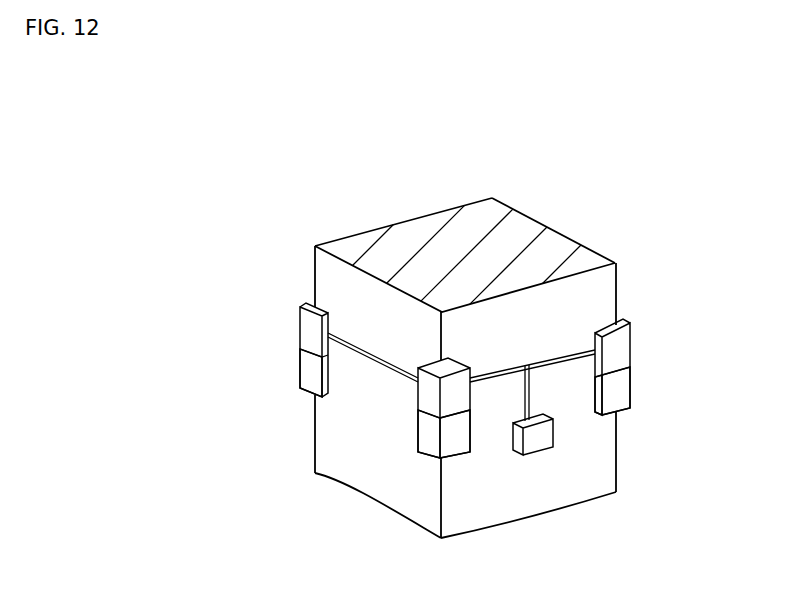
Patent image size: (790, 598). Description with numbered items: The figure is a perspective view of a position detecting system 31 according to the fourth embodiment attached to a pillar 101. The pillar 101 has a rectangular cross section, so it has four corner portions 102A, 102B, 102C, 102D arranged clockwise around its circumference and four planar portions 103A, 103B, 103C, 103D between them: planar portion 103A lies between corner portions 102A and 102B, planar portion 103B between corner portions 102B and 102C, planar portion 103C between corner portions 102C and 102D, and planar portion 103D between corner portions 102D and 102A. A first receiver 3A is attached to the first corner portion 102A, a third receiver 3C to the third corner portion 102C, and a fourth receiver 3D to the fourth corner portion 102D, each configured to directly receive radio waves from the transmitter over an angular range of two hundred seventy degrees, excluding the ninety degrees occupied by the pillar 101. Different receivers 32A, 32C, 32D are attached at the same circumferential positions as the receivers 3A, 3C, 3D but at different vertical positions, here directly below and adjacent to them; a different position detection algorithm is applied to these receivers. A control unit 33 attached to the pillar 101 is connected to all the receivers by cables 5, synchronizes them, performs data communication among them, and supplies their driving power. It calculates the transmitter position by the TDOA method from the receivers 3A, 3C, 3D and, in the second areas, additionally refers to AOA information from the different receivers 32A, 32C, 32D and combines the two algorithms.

The position detecting system 31 is at (580, 186).
The pillar 101 is at (445, 222).
The first corner portion 102A is at (315, 265).
The second corner portion 102B is at (492, 197).
The third corner portion 102C is at (617, 287).
The fourth corner portion 102D is at (438, 518).
The planar portion 103A is at (373, 228).
The planar portion 103B is at (562, 230).
The planar portion 103C is at (573, 493).
The planar portion 103D is at (368, 487).
The first receiver 3A is at (307, 328).
The third receiver 3C is at (623, 345).
The fourth receiver 3D is at (422, 398).
The different receiver 32A is at (308, 377).
The different receiver 32C is at (623, 392).
The different receiver 32D is at (427, 433).
The cable 5 is at (360, 351).
The control unit 33 is at (540, 443).